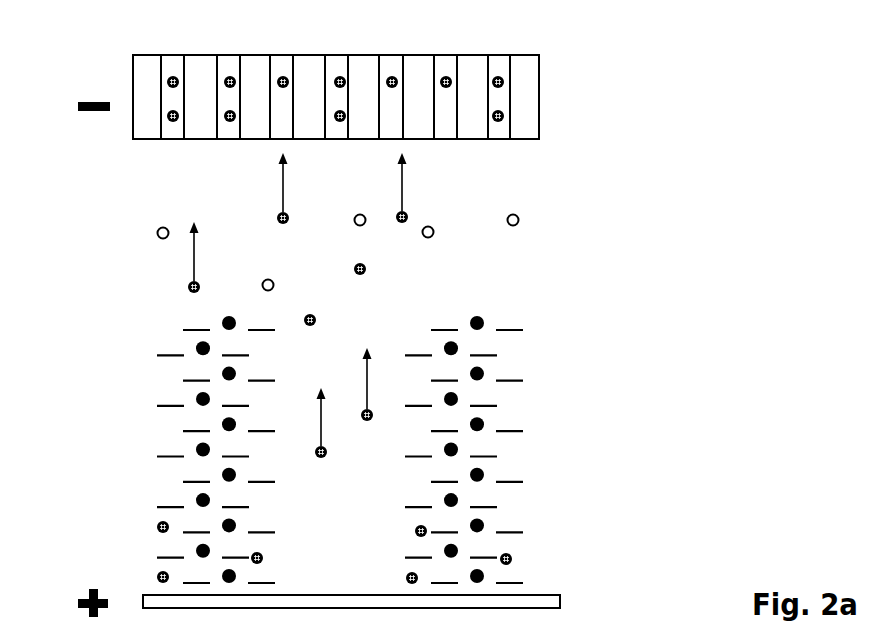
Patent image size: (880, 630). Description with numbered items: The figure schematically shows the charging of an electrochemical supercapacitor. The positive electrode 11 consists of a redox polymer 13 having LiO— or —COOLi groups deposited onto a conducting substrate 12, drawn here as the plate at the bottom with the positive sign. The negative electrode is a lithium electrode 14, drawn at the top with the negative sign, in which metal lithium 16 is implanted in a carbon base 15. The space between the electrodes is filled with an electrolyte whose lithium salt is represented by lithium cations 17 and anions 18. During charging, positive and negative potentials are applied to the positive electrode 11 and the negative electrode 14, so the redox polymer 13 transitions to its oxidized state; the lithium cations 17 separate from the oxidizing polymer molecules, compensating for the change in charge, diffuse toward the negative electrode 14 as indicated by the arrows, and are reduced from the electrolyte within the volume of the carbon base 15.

The electrode 11 is at (135, 325).
The conducting substrate 12 is at (562, 597).
The redox polymer 13 is at (535, 317).
The lithium electrode 14 is at (336, 77).
The carbon base 15 is at (530, 102).
The metal lithium 16 is at (498, 117).
The lithium cations 17 is at (408, 213).
The anions 18 is at (440, 238).